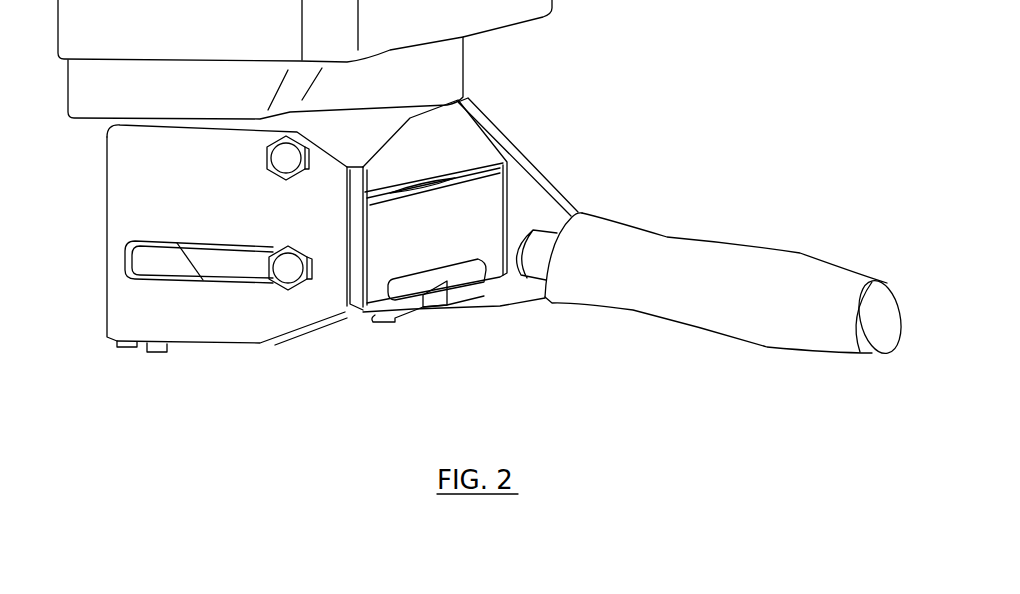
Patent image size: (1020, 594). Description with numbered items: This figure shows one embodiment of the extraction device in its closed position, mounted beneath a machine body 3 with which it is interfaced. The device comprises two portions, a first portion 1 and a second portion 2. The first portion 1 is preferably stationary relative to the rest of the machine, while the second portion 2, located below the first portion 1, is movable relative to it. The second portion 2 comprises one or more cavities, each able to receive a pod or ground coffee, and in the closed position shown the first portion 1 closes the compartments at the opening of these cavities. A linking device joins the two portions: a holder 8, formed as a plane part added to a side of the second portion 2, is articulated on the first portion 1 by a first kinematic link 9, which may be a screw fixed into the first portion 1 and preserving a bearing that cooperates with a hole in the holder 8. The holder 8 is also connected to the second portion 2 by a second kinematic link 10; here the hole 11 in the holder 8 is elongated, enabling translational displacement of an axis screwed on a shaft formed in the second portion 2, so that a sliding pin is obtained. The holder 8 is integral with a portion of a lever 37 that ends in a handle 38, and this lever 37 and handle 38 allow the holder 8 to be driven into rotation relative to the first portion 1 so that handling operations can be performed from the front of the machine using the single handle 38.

The first portion 1 is at (458, 132).
The second portion 2 is at (452, 238).
The base body 3 is at (435, 67).
The holder 8 is at (231, 317).
The first kinematic link 9 is at (280, 158).
The second kinematic link 10 is at (287, 270).
The hole 11 is at (153, 260).
The lever 37 is at (550, 185).
The handle 38 is at (776, 284).